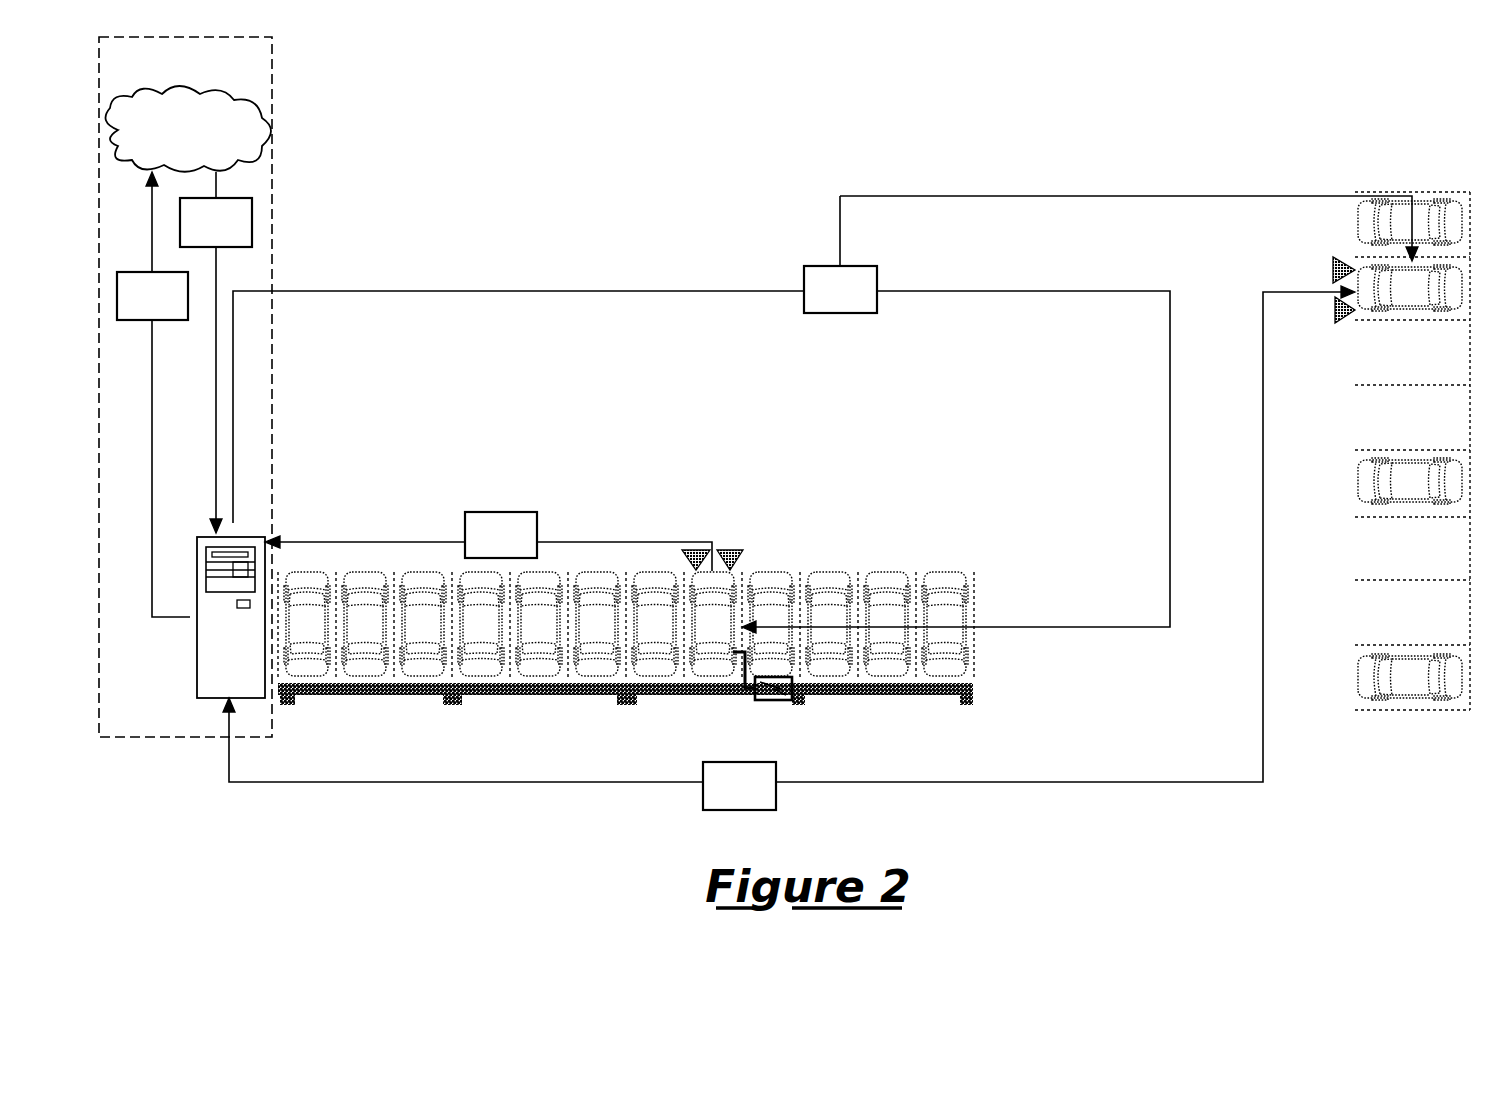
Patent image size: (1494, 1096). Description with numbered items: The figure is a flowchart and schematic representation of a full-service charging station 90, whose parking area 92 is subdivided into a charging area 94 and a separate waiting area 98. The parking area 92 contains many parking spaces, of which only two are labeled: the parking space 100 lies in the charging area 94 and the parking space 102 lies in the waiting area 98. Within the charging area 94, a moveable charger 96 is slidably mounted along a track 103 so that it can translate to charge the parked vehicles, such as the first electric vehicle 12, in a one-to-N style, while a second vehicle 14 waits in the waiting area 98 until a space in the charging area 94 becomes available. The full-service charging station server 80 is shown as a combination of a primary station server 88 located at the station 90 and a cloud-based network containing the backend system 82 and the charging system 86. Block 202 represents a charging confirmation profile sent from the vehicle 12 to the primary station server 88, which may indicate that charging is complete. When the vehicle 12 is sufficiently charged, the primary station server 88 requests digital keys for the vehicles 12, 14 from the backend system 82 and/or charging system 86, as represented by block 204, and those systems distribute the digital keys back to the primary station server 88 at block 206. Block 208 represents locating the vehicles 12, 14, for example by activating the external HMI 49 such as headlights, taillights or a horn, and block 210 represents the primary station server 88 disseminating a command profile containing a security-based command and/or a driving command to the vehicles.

The electric vehicle 12 is at (712, 668).
The vehicle 14 is at (1422, 298).
The external HMI 49 is at (728, 553).
The full-service charging station server 80 is at (272, 100).
The backend system 82 is at (189, 129).
The charging system 86 is at (189, 129).
The primary station server 88 is at (197, 703).
The full-service charging station 90 is at (1088, 95).
The parking area 92 is at (1152, 150).
The charging area 94 is at (925, 485).
The charger 96 is at (773, 703).
The waiting area 98 is at (1372, 160).
The parking space 100 is at (737, 582).
The parking space 102 is at (1358, 260).
The track 103 is at (875, 690).
The charging confirmation profile block 202 is at (488, 541).
The digital key request block 204 is at (153, 394).
The digital key distribution block 206 is at (216, 352).
The vehicle locating block 208 is at (789, 548).
The command profile dissemination block 210 is at (701, 414).